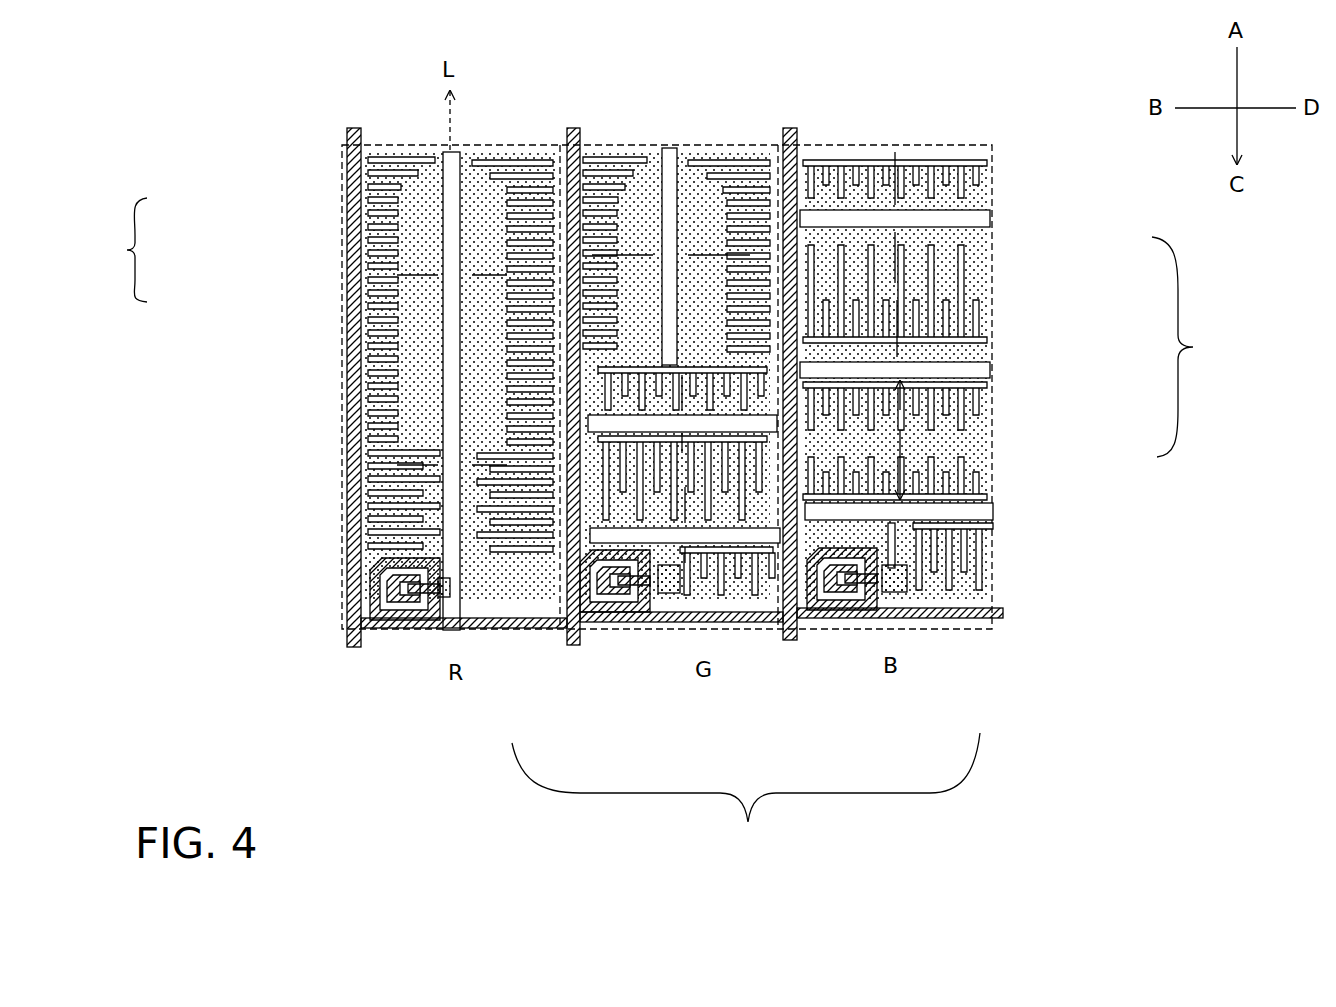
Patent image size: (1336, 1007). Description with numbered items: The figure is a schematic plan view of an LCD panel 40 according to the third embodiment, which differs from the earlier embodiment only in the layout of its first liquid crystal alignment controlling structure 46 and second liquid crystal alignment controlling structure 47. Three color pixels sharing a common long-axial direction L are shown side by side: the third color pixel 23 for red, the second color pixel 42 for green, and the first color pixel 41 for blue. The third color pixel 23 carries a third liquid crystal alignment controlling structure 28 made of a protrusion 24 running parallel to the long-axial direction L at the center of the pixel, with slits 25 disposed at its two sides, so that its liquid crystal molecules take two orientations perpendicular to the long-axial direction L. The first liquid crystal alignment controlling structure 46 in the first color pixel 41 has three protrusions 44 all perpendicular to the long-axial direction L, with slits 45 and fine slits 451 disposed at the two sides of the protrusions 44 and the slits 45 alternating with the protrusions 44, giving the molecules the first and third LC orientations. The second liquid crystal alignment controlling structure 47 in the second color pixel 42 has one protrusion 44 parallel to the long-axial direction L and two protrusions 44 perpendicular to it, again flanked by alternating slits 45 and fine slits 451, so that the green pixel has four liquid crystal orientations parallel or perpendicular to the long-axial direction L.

The LCD panel 40 is at (92, 108).
The third color pixel 23 is at (370, 142).
The protrusion 24 is at (440, 205).
The slit 25 is at (360, 300).
The third liquid crystal alignment controlling structure 28 is at (119, 250).
The first color pixel 41 is at (915, 147).
The second color pixel 42 is at (655, 147).
The protrusion 44 is at (990, 218).
The slit 45 is at (585, 150).
The fine slit 451 is at (733, 205).
The first liquid crystal alignment controlling structure 46 is at (1204, 347).
The second liquid crystal alignment controlling structure 47 is at (746, 798).